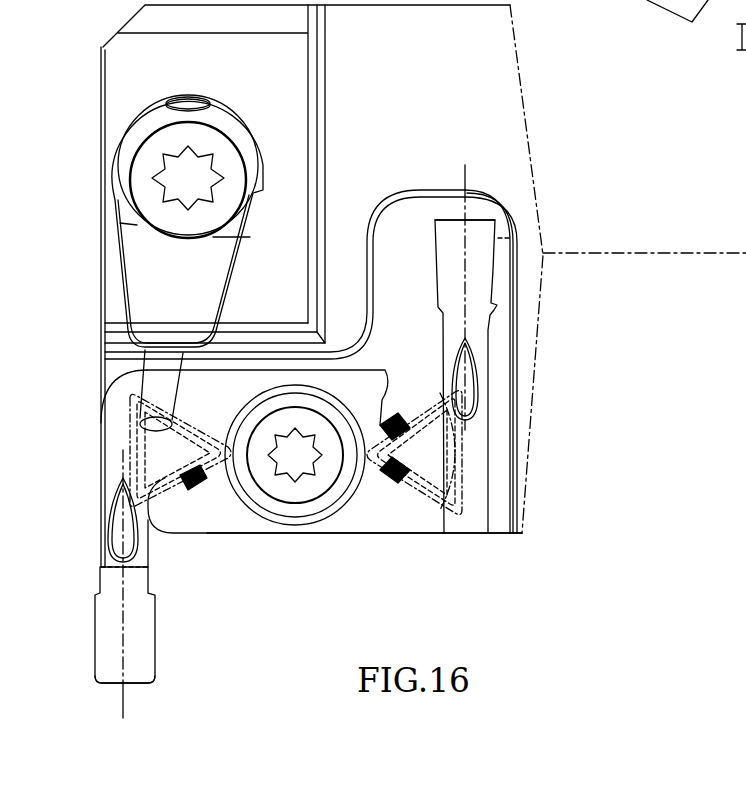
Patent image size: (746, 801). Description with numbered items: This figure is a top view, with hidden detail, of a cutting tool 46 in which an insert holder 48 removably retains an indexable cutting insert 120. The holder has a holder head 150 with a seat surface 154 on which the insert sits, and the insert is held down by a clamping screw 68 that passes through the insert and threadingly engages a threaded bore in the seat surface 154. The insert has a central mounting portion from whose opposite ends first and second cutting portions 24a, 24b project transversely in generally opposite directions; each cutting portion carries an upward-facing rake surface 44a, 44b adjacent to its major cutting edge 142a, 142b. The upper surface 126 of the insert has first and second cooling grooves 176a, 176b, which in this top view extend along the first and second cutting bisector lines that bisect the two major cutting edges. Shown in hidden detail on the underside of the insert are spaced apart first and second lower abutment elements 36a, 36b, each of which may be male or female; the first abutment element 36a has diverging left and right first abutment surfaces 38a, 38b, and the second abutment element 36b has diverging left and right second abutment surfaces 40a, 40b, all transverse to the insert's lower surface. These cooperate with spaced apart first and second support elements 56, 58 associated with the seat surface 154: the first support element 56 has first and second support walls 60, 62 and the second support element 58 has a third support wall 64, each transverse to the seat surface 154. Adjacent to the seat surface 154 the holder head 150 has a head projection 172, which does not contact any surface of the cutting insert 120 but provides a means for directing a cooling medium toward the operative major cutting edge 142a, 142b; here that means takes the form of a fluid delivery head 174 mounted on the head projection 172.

The cutting tool 46 is at (553, 92).
The insert holder 48 is at (515, 140).
The first cutting portion 24a is at (83, 590).
The second cutting portion 24b is at (534, 333).
The rake surface 44a is at (110, 648).
The rake surface 44b is at (486, 244).
The operative major cutting edge 142a is at (117, 682).
The operative major cutting edge 142b is at (488, 196).
The first cooling groove 176a is at (108, 505).
The second cooling groove 176b is at (470, 366).
The first lower abutment element 36a is at (170, 470).
The second lower abutment element 36b is at (418, 457).
The left first abutment surface 38a is at (183, 433).
The right first abutment surface 38b is at (200, 487).
The left second abutment surface 40a is at (400, 482).
The right second abutment surface 40b is at (397, 392).
The first support element 56 is at (422, 442).
The second support element 58 is at (165, 447).
The first support wall 60 is at (398, 484).
The second support wall 62 is at (398, 372).
The third support wall 64 is at (182, 508).
The clamping screw 68 is at (312, 464).
The cutting insert 120 is at (440, 520).
The upper surface 126 is at (252, 533).
The holder head 150 is at (348, 297).
The seat surface 154 is at (432, 302).
The head projection 172 is at (300, 304).
The fluid delivery head 174 is at (205, 304).